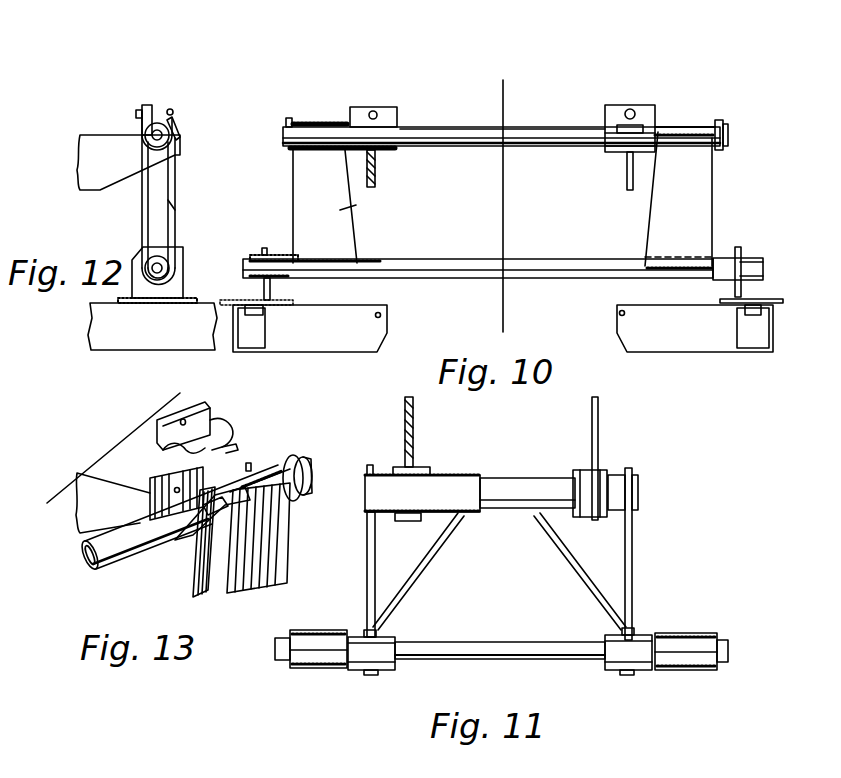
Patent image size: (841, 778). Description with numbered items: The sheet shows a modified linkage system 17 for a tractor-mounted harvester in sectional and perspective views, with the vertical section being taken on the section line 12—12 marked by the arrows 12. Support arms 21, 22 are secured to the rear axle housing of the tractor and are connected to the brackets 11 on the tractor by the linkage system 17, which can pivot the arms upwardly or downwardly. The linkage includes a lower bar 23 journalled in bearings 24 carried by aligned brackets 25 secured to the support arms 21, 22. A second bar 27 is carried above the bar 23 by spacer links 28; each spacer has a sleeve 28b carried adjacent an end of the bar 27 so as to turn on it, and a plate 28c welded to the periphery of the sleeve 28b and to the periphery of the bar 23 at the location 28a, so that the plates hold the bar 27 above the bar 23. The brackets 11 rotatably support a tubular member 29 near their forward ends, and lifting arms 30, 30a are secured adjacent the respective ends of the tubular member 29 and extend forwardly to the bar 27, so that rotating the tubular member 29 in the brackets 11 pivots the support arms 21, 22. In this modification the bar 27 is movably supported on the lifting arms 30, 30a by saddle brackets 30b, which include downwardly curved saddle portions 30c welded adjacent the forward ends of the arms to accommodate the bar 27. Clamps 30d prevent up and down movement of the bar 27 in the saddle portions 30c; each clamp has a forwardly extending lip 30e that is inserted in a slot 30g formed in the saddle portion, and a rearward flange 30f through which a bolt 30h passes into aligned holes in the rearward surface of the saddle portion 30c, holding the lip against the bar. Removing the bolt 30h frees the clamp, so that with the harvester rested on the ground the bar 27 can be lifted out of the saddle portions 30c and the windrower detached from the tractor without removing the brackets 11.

In FIG. 11, the brackets 11 is at (413, 422).
In FIG. 10, the section line 12— 12 is at (500, 86).
In FIG. 10, the linkage system 17 is at (535, 122).
In FIG. 11, the linkage system 17 is at (634, 546).
In FIG. 10, the support arm 21 is at (714, 338).
In FIG. 12, the support arm 21 is at (126, 336).
In FIG. 10, the support arm 22 is at (316, 338).
In FIG. 10, the bar 23 is at (524, 260).
In FIG. 12, the bar 23 is at (168, 262).
In FIG. 10, the bearings 24 is at (262, 256).
In FIG. 12, the bearings 24 is at (142, 272).
In FIG. 10, the brackets 25 is at (276, 303).
In FIG. 12, the brackets 25 is at (178, 294).
In FIG. 10, the bar 27 is at (568, 147).
In FIG. 12, the bar 27 is at (176, 140).
In FIG. 13, the bar 27 is at (132, 556).
In FIG. 11, the bar 27 is at (463, 642).
In FIG. 10, the spacer links 28 is at (356, 238).
In FIG. 12, the spacer links 28 is at (176, 186).
In FIG. 13, the spacer links 28 is at (286, 560).
In FIG. 11, the spacer links 28 is at (680, 633).
In FIG. 10, the plate securing point 28a is at (664, 272).
In FIG. 10, the sleeves 28b is at (305, 124).
In FIG. 13, the sleeves 28b is at (260, 470).
In FIG. 11, the sleeves 28b is at (316, 655).
In FIG. 10, the plates 28c is at (346, 216).
In FIG. 12, the plates 28c is at (172, 218).
In FIG. 13, the plates 28c is at (210, 576).
In FIG. 11, the plates 28c is at (313, 630).
In FIG. 11, the tubular member 29 is at (518, 486).
In FIG. 10, the lifting arm 30 is at (627, 176).
In FIG. 12, the lifting arm 30 is at (89, 152).
In FIG. 13, the lifting arm 30 is at (80, 524).
In FIG. 11, the lifting arm 30 is at (633, 570).
In FIG. 10, the lifting arm 30a is at (376, 164).
In FIG. 11, the lifting arm 30a is at (366, 572).
In FIG. 10, the saddle brackets 30b is at (650, 105).
In FIG. 12, the saddle brackets 30b is at (172, 108).
In FIG. 11, the saddle brackets 30b is at (385, 638).
In FIG. 12, the saddle portions 30c is at (184, 116).
In FIG. 13, the saddle portions 30c is at (154, 482).
In FIG. 12, the clamps 30d is at (147, 105).
In FIG. 13, the clamps 30d is at (226, 424).
In FIG. 13, the lips 30e is at (236, 446).
In FIG. 13, the flanges 30f is at (192, 404).
In FIG. 13, the slots 30g is at (216, 510).
In FIG. 12, the bolts 30h is at (170, 108).